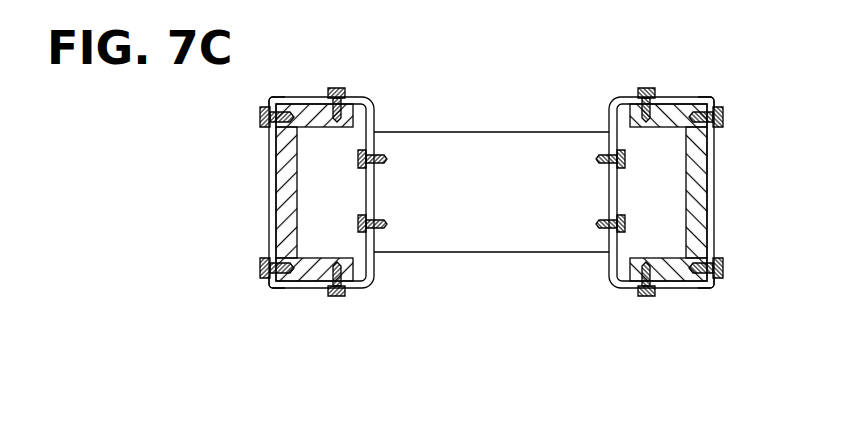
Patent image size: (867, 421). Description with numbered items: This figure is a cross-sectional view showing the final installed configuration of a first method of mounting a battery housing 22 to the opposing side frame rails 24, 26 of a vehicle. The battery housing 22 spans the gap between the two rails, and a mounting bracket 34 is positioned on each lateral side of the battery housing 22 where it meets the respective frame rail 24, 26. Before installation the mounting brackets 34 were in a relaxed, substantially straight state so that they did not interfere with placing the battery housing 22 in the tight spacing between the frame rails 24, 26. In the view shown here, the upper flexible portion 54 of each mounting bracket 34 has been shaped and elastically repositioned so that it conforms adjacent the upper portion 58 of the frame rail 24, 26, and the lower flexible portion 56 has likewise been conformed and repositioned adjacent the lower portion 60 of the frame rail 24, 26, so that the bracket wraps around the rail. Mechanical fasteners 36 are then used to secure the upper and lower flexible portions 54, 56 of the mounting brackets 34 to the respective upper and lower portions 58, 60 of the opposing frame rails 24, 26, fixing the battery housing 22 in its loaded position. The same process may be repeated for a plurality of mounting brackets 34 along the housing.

The battery housing 22 is at (487, 138).
The frame rail 24 is at (274, 208).
The frame rail 26 is at (709, 208).
The mounting bracket 34 is at (378, 97).
The mechanical fastener 36 is at (338, 88).
The upper flexible portion 54 is at (277, 97).
The lower flexible portion 56 is at (278, 289).
The upper portion 58 is at (298, 106).
The lower portion 60 is at (306, 272).